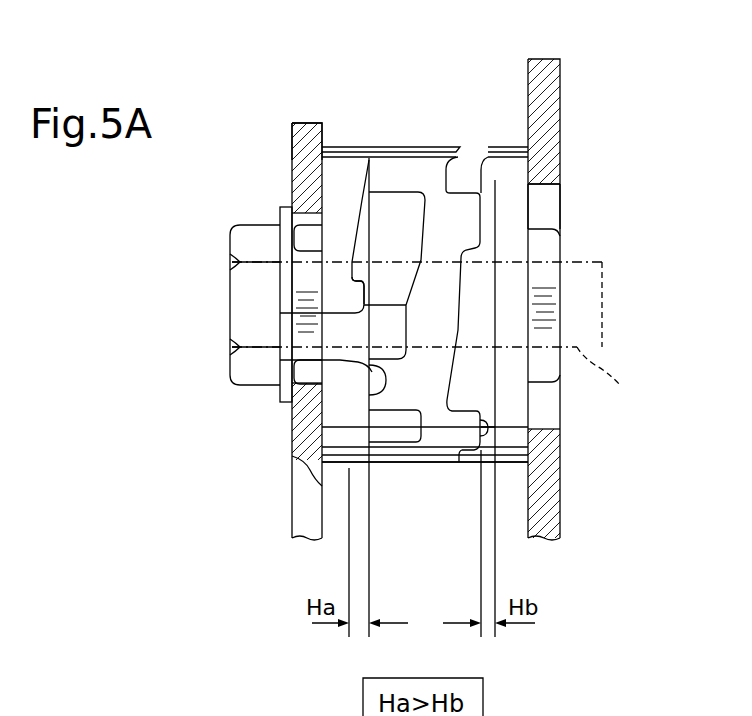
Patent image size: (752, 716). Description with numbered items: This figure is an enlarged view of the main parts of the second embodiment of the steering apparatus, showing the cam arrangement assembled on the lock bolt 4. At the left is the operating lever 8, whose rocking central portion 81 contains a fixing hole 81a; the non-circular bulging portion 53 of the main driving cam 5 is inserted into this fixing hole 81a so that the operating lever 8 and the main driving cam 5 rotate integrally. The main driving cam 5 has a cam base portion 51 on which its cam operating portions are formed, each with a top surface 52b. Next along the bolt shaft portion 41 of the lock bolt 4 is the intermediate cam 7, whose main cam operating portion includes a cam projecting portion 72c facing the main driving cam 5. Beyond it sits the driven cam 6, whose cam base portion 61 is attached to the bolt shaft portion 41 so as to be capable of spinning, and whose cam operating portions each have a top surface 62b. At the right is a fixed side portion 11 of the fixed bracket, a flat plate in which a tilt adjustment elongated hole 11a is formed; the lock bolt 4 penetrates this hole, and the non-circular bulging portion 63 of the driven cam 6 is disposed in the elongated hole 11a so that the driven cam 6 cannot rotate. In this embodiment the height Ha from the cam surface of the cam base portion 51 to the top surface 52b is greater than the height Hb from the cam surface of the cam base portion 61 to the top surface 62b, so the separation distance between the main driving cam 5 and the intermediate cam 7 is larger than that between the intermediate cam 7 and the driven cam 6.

The lock bolt 4 is at (610, 271).
The main driving cam 5 is at (347, 140).
The driven cam 6 is at (507, 140).
The intermediate cam 7 is at (437, 140).
The operating lever 8 is at (286, 492).
The fixed side portion 11 is at (560, 97).
The tilt adjustment elongated hole 11a is at (548, 205).
The bolt shaft portion 41 is at (606, 381).
The cam base portion 51 is at (325, 313).
The top surface 52b is at (325, 358).
The bulging portion 53 is at (305, 287).
The cam base portion 61 is at (486, 312).
The bulging portion 63 is at (540, 338).
The top surface 62b is at (480, 420).
The cam projecting portion 72c is at (383, 173).
The rocking central portion 81 is at (293, 172).
The fixing hole 81a is at (300, 250).